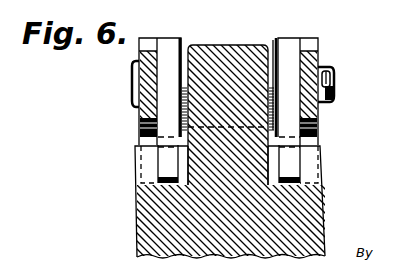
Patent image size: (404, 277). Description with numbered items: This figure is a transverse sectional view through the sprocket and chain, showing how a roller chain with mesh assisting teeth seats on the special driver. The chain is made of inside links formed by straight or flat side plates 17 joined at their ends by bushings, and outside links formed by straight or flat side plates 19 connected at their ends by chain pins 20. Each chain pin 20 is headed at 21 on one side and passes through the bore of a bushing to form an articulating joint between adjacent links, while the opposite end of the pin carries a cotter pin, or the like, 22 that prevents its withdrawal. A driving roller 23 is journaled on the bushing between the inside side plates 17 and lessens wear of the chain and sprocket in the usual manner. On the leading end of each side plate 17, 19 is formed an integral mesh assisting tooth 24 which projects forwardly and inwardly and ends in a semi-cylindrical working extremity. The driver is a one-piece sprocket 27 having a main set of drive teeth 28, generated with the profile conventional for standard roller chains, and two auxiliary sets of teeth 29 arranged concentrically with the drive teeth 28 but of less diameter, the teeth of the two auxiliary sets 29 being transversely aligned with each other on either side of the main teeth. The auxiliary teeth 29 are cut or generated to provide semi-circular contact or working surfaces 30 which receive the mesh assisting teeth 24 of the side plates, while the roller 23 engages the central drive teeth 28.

The side plates 17 is at (172, 37).
The side plates 19 is at (152, 37).
The chain pins 20 is at (340, 70).
The head 21 is at (132, 70).
The cotter pins 22 is at (338, 84).
The driving rollers 23 is at (254, 43).
The mesh assisting tooth 24 is at (135, 204).
The sprocket 27 is at (133, 248).
The main drive teeth 28 is at (215, 50).
The auxiliary sets of teeth 29 is at (135, 152).
The working surfaces 30 is at (297, 193).